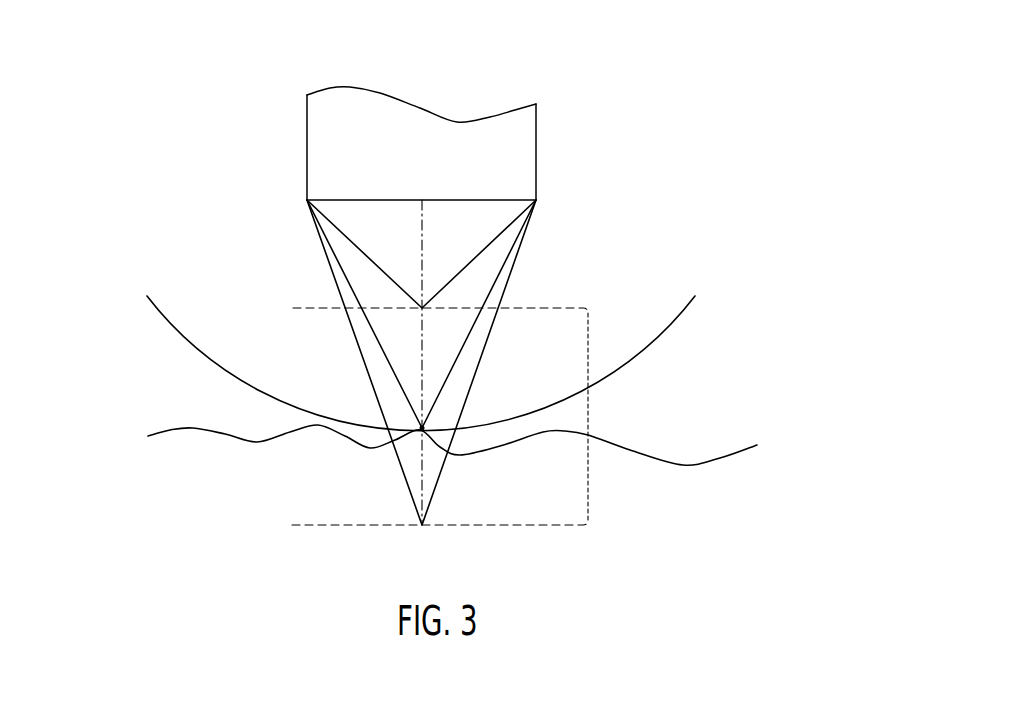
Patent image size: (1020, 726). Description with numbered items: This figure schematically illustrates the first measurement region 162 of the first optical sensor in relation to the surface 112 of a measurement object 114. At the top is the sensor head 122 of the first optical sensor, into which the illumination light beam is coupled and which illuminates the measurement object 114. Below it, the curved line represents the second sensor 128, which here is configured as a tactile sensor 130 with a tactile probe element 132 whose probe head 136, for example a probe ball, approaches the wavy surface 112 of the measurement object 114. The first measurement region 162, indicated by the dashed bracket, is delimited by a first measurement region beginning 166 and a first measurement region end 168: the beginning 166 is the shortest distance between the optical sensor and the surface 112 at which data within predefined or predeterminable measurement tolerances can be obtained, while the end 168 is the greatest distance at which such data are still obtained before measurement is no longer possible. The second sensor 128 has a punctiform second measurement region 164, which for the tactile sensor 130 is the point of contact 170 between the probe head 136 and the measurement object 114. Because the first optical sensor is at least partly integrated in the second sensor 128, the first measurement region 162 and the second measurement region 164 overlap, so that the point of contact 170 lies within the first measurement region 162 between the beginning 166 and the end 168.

The surface 112 is at (413, 403).
The measurement object 114 is at (175, 427).
The sensor head 122 is at (522, 173).
The second sensor 128 is at (514, 363).
The tactile sensor 130 is at (514, 363).
The tactile probe element 132 is at (514, 363).
The probe head 136 is at (640, 355).
The first measurement region 162 is at (588, 417).
The second measurement region 164 is at (348, 459).
The first measurement region beginning 166 is at (522, 308).
The first measurement region end 168 is at (520, 525).
The point of contact 170 is at (418, 435).